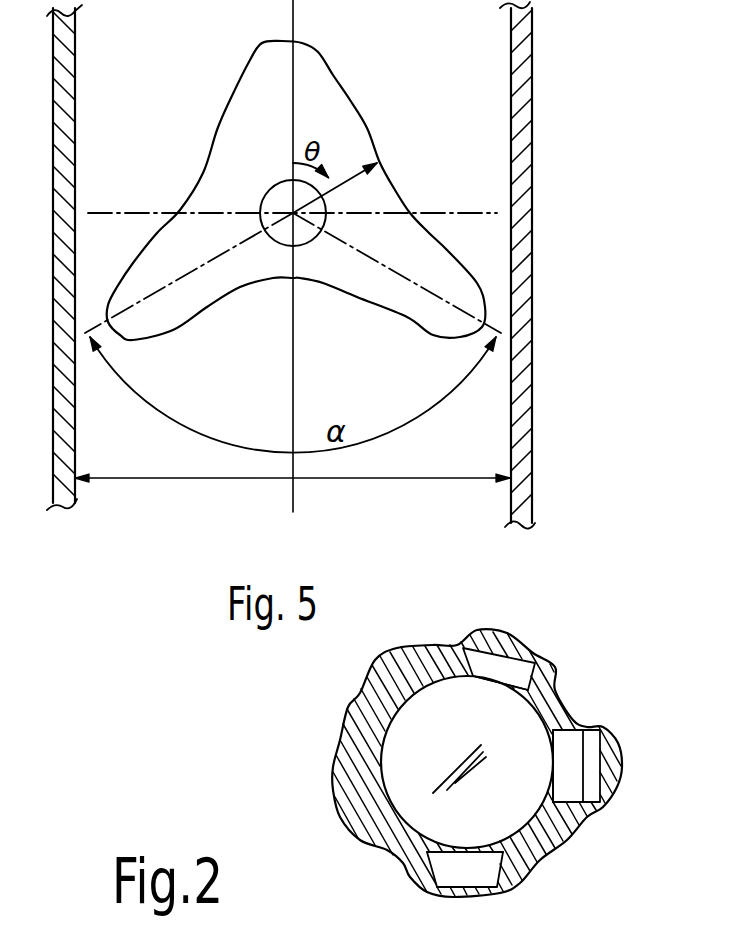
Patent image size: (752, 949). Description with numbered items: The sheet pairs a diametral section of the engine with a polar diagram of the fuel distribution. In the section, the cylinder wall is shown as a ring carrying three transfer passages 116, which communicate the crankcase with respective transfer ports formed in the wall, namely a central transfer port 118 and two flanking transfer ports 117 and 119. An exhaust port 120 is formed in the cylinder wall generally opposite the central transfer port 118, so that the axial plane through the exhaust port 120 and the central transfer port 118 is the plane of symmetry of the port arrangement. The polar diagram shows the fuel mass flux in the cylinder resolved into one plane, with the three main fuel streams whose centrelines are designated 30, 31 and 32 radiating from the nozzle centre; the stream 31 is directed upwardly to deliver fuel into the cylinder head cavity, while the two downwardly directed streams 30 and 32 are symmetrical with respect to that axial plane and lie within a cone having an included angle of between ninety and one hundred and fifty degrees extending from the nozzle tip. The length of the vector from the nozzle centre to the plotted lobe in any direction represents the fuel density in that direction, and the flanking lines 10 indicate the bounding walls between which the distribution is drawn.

In FIG. 5, the housing wall 10 is at (511, 68).
In FIG. 5, the fuel stream centreline 30 is at (140, 303).
In FIG. 5, the fuel stream 31 is at (293, 18).
In FIG. 5, the fuel stream centreline 32 is at (430, 300).
In FIG. 2, the transfer passage 116 is at (505, 660).
In FIG. 2, the flanking transfer port 117 is at (485, 673).
In FIG. 2, the central transfer port 118 is at (557, 772).
In FIG. 2, the flanking transfer port 119 is at (453, 851).
In FIG. 2, the exhaust port 120 is at (372, 747).